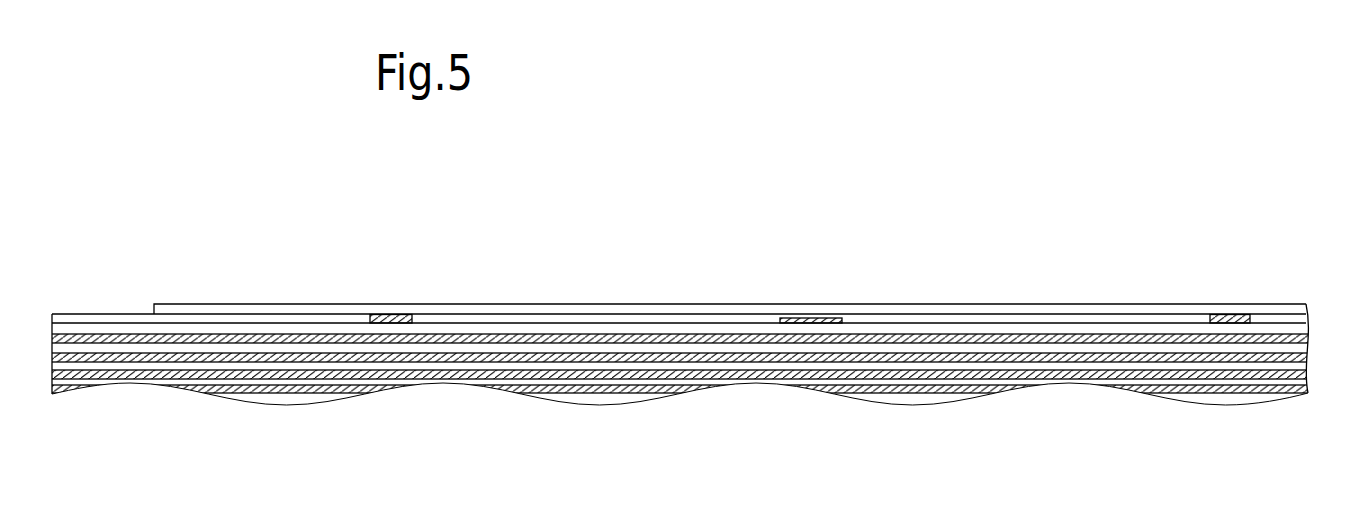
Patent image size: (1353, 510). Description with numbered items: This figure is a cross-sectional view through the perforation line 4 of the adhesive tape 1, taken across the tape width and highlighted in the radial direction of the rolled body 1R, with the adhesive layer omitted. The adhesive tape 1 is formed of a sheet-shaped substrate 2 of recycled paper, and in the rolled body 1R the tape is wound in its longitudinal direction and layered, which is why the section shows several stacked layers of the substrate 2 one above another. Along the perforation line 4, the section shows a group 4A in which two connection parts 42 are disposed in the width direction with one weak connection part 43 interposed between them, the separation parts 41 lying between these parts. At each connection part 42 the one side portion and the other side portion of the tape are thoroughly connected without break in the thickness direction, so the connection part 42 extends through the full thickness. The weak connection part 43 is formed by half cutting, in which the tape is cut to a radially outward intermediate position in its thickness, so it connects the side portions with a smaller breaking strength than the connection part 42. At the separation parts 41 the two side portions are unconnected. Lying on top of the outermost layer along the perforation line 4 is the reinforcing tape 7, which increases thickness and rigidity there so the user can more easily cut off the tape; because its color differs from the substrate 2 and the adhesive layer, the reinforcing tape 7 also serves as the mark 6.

The rolled body 1R is at (146, 195).
The adhesive tape 1 is at (118, 337).
The substrate 2 is at (682, 387).
The mark 6 is at (209, 307).
The reinforcing tape 7 is at (730, 309).
The perforation line 4 is at (1331, 312).
The group 4A is at (1028, 175).
The separation part 41 is at (262, 322).
The connection part 42 is at (400, 318).
The weak connection part 43 is at (812, 320).